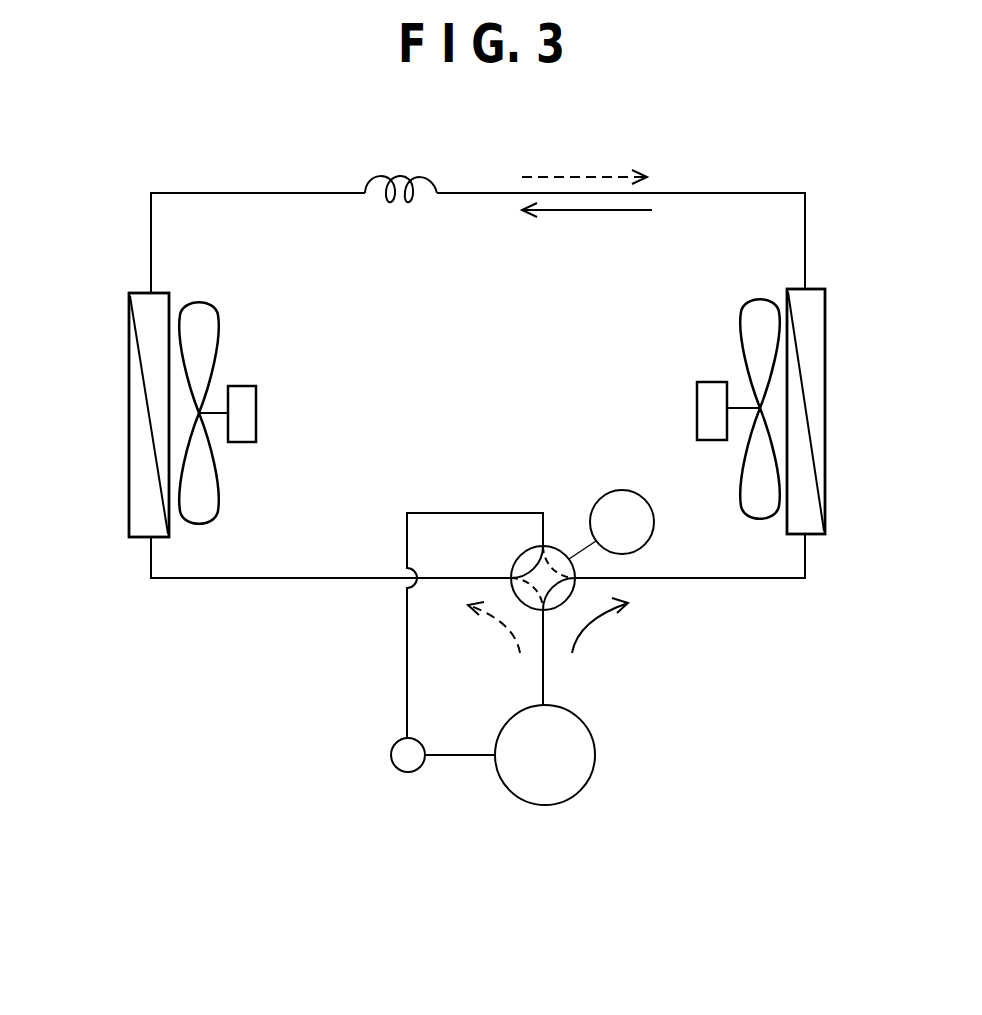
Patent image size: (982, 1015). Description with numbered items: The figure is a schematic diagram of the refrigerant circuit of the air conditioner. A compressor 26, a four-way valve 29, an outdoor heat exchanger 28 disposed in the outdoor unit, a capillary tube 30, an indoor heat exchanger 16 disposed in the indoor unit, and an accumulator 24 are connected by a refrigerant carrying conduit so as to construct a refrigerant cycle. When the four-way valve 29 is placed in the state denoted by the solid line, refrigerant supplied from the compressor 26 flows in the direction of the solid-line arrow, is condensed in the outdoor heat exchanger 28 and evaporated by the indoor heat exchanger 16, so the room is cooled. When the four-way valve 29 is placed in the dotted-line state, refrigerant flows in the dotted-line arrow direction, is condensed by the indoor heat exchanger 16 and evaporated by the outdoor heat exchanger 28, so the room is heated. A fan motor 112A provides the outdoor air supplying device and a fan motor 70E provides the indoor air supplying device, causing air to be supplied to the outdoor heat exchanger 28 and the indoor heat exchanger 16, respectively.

The indoor heat exchanger 16 is at (137, 480).
The accumulator 24 is at (412, 763).
The compressor 26 is at (557, 792).
The outdoor heat exchanger 28 is at (825, 411).
The four-way valve 29 is at (548, 548).
The capillary tube 30 is at (366, 176).
The fan motor 70E is at (256, 410).
The fan motor 112A is at (697, 410).